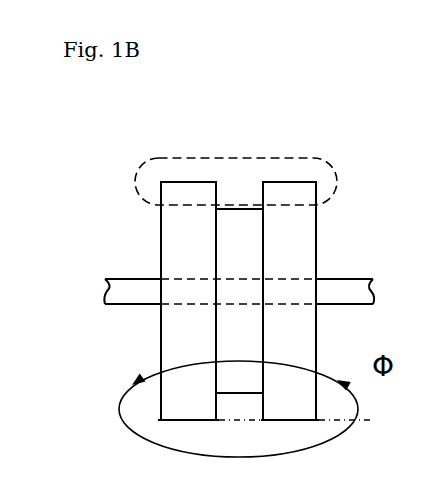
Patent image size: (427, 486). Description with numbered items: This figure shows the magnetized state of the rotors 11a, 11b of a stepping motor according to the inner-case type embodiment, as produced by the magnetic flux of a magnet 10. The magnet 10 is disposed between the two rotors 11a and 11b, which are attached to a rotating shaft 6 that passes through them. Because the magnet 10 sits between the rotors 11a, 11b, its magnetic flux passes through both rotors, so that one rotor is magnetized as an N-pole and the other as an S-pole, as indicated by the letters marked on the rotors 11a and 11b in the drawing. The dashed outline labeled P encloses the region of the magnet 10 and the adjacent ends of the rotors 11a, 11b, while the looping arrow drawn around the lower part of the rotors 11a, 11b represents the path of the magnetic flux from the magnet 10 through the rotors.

The magnet 10 is at (237, 222).
The rotor 11a is at (170, 265).
The rotor 11b is at (297, 267).
The rotating shaft 6 is at (126, 300).
The pole portion P is at (248, 158).